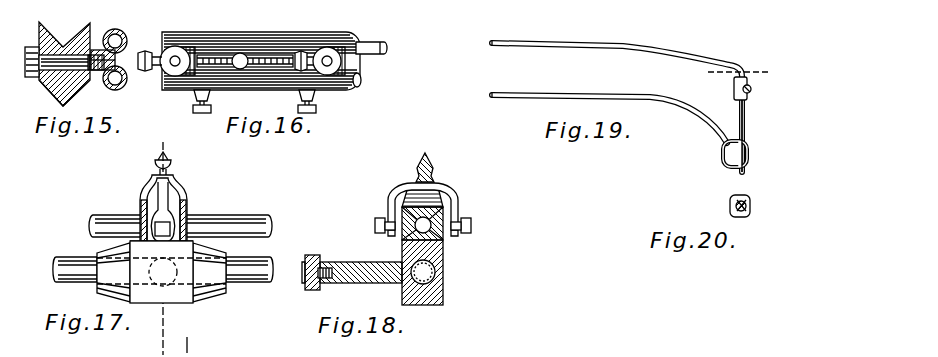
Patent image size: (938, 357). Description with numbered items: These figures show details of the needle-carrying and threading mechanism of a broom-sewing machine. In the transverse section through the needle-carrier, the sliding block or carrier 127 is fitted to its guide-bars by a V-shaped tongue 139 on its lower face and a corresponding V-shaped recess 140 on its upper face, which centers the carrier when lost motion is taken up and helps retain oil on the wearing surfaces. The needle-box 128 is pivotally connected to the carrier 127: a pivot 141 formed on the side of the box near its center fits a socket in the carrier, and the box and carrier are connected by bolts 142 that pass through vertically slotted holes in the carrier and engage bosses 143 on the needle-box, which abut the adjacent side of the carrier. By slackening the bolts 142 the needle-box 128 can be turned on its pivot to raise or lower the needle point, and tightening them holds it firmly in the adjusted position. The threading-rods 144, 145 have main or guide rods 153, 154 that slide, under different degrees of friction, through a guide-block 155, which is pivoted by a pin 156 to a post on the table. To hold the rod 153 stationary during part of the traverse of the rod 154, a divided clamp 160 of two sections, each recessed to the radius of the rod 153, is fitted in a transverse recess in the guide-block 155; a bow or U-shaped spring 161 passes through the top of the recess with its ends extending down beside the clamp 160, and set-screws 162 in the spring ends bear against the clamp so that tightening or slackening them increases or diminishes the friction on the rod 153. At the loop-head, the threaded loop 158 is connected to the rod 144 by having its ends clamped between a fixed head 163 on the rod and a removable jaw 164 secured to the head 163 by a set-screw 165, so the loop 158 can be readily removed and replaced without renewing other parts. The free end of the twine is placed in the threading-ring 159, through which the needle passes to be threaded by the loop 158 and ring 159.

In FIG. 15, the sliding block or carrier 127 is at (33, 78).
In FIG. 15, the needle-box 128 is at (120, 85).
In FIG. 16, the needle-box 128 is at (274, 53).
In FIG. 15, the V-shaped tongue 139 is at (71, 98).
In FIG. 15, the V-shaped recess 140 is at (63, 36).
In FIG. 16, the pivot 141 is at (248, 55).
In FIG. 15, the bolts 142 is at (36, 49).
In FIG. 16, the bolts 142 is at (158, 55).
In FIG. 15, the bosses 143 is at (98, 38).
In FIG. 16, the bosses 143 is at (172, 90).
In FIG. 19, the threading-rod 144 is at (617, 98).
In FIG. 19, the threading-rod 145 is at (609, 110).
In FIG. 17, the guide-rod 153 is at (180, 215).
In FIG. 18, the guide-rod 153 is at (444, 245).
In FIG. 17, the guide-rod 154 is at (163, 272).
In FIG. 18, the guide-rod 154 is at (408, 283).
In FIG. 17, the guide-block 155 is at (183, 296).
In FIG. 18, the guide-block 155 is at (436, 272).
In FIG. 18, the pin 156 is at (352, 268).
In FIG. 19, the threaded loop 158 is at (758, 136).
In FIG. 19, the threading-ring 159 is at (720, 136).
In FIG. 17, the divided clamp 160 is at (141, 215).
In FIG. 18, the divided clamp 160 is at (390, 214).
In FIG. 17, the bow or U-shaped spring 161 is at (176, 187).
In FIG. 18, the bow or U-shaped spring 161 is at (415, 180).
In FIG. 18, the set-screws 162 is at (375, 229).
In FIG. 19, the fixed head 163 is at (752, 87).
In FIG. 20, the fixed head 163 is at (748, 213).
In FIG. 19, the removable jaw 164 is at (734, 93).
In FIG. 20, the removable jaw 164 is at (730, 207).
In FIG. 19, the set-screw 165 is at (752, 93).
In FIG. 20, the set-screw 165 is at (750, 203).